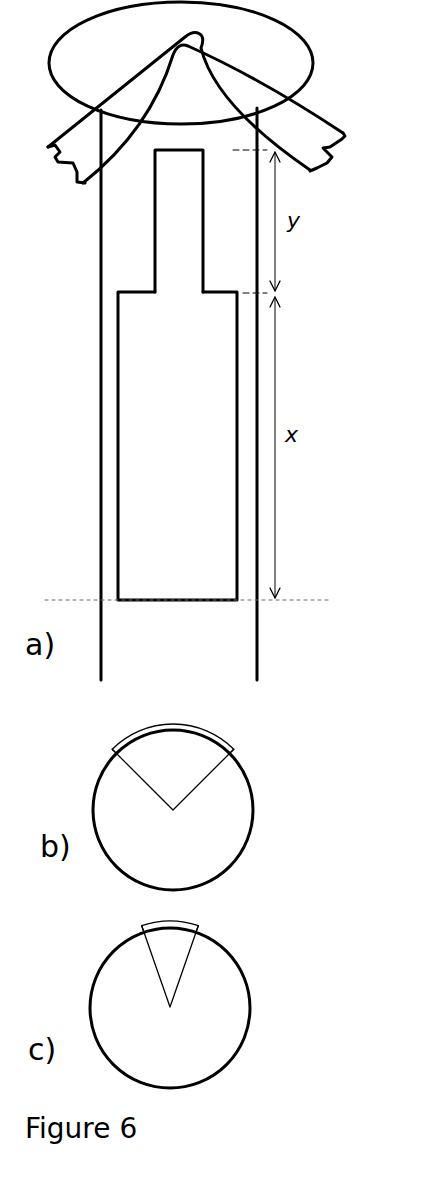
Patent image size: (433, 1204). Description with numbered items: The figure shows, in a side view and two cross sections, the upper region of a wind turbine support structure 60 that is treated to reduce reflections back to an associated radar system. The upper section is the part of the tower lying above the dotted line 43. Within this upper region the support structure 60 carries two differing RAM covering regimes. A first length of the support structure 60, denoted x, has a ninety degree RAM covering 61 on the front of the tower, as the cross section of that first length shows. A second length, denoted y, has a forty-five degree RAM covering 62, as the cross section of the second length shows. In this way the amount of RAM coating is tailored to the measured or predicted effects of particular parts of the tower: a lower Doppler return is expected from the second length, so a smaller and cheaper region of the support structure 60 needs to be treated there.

The wind turbine support structure 60 is at (333, 215).
The 90° RAM covering 61 is at (117, 463).
The 45° RAM covering 62 is at (155, 240).
The dotted line 43 is at (285, 596).